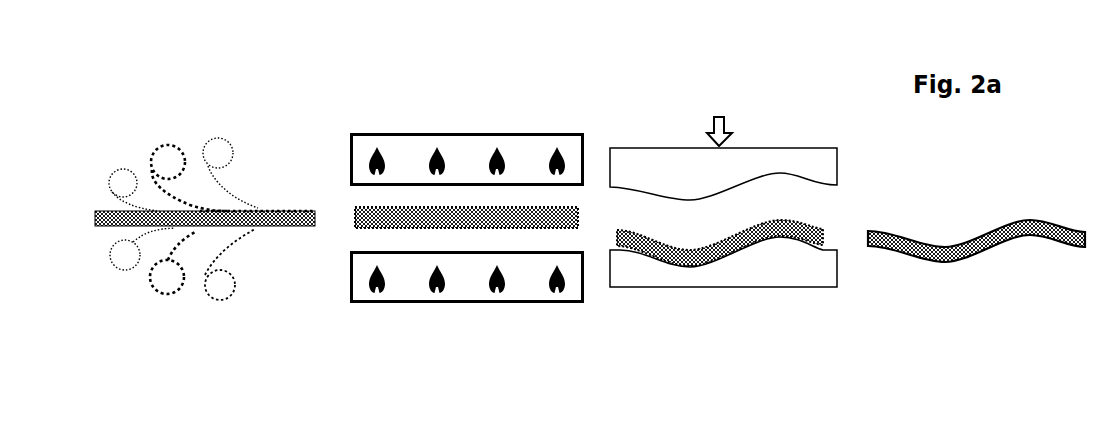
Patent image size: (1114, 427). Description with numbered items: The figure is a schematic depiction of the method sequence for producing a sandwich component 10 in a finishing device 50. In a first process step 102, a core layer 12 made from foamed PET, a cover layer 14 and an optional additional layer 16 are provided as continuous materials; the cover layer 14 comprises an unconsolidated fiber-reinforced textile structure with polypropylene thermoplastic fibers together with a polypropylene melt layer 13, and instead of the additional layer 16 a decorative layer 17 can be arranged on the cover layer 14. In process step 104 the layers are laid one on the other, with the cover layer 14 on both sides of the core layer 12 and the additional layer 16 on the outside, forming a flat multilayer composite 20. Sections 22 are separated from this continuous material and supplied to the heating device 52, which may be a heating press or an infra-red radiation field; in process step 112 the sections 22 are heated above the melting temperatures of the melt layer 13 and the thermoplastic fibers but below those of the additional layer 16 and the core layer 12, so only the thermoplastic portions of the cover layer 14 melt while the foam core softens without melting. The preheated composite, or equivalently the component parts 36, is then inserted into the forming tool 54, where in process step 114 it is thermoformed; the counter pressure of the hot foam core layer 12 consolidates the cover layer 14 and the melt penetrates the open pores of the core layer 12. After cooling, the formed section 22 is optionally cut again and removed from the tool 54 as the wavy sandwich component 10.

The sandwich component 10 is at (955, 247).
The core layer 12 is at (104, 229).
The melt layer 13 is at (125, 270).
The cover layer 14 is at (147, 319).
The additional layer 16 is at (247, 294).
The decorative layer 17 is at (223, 300).
The multilayer composite 20 is at (285, 197).
The sections 22 is at (621, 162).
The component parts 36 is at (450, 207).
The finishing device 50 is at (863, 312).
The heating device 52 is at (432, 125).
The forming tool 54 is at (675, 138).
The first process step 102 is at (153, 105).
The process step 104 is at (263, 120).
The process step 112 is at (460, 75).
The process step 114 is at (717, 88).